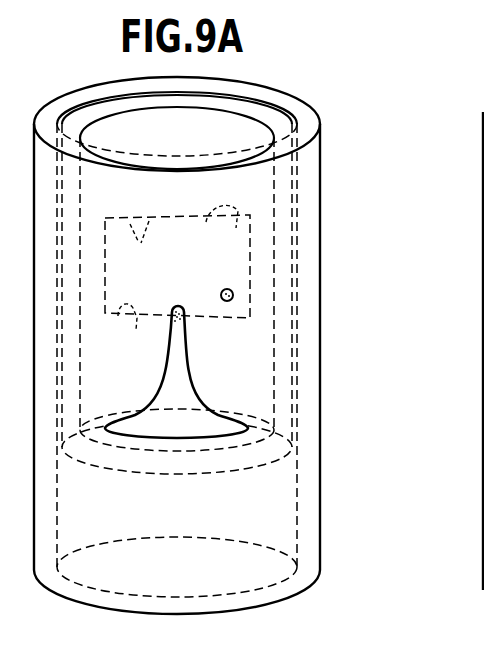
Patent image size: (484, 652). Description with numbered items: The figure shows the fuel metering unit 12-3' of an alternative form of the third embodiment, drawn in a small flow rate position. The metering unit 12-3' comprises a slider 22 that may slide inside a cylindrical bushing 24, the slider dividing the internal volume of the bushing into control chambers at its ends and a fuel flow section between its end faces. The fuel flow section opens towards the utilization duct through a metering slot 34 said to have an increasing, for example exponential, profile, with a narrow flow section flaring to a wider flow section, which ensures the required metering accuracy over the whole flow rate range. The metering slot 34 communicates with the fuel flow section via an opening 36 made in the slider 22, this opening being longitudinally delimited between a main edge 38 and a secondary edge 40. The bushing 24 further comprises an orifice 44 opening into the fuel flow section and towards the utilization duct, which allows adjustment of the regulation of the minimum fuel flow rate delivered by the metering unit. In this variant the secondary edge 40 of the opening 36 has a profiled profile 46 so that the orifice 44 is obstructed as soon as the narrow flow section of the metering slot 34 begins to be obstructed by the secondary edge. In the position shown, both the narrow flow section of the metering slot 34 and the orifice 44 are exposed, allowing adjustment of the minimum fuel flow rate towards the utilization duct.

The metering unit 12-3' is at (213, 369).
The slider 22 is at (210, 104).
The bushing 24 is at (284, 103).
The metering slot 34 is at (224, 422).
The opening 36 is at (248, 278).
The main edge 38 is at (131, 336).
The secondary edge 40 is at (133, 223).
The orifice 44 is at (227, 301).
The profiled profile 46 is at (222, 230).